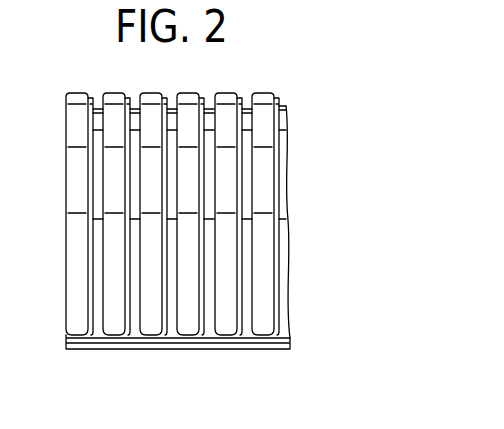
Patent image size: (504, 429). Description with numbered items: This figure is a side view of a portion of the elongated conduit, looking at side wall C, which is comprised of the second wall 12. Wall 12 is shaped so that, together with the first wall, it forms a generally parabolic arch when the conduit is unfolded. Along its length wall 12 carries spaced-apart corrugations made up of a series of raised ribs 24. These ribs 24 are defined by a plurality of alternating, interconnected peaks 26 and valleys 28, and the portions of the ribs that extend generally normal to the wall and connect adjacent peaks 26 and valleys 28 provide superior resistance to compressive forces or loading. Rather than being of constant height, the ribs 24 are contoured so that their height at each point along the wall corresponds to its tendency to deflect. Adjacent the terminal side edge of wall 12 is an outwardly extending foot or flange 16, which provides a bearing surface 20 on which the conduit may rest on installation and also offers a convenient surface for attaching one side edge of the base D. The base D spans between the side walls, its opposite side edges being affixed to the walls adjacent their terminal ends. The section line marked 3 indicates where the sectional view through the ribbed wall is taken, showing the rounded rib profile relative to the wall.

The second wall 12 is at (94, 106).
The ribs 24 is at (119, 107).
The peaks 26 is at (223, 188).
The valleys 28 is at (210, 290).
The foot or flange 16 is at (170, 340).
The bearing surface 20 is at (106, 360).
The side wall C is at (56, 249).
The base D is at (220, 357).
The section line 3- 3 is at (246, 380).